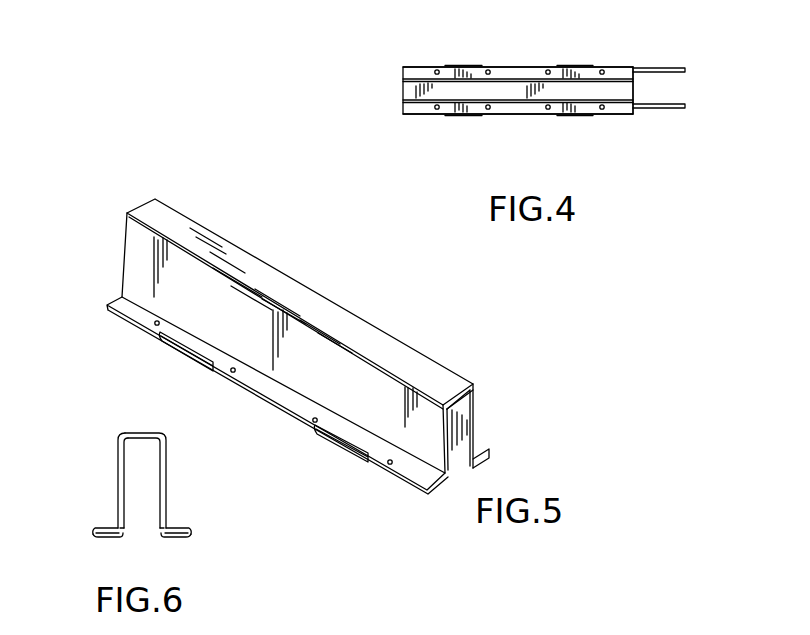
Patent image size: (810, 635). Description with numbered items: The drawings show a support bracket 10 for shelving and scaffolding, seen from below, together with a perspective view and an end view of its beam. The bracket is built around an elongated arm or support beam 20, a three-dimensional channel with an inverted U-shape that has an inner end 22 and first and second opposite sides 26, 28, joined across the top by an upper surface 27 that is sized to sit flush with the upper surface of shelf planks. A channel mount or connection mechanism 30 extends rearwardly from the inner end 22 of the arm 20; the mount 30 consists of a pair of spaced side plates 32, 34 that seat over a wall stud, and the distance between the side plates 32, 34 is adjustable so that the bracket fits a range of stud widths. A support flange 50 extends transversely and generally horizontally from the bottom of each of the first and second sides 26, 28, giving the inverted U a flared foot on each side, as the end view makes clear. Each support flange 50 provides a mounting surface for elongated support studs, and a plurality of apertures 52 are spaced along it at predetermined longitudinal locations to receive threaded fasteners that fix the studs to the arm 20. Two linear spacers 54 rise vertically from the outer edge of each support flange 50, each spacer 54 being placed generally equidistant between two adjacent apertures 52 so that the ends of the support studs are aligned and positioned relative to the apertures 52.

In FIG. 4, the support bracket 10 is at (376, 106).
In FIG. 5, the elongated arm or support beam 20 is at (362, 298).
In FIG. 6, the elongated arm or support beam 20 is at (113, 415).
In FIG. 4, the inner end 22 is at (634, 80).
In FIG. 4, the first side 26 is at (517, 103).
In FIG. 5, the first side 26 is at (135, 262).
In FIG. 6, the first side 26 is at (117, 466).
In FIG. 5, the upper surface 27 is at (155, 213).
In FIG. 4, the second side 28 is at (515, 78).
In FIG. 5, the second side 28 is at (478, 412).
In FIG. 6, the second side 28 is at (166, 472).
In FIG. 4, the channel mount or connection mechanism 30 is at (670, 64).
In FIG. 4, the side plate 32 is at (662, 110).
In FIG. 4, the side plate 34 is at (682, 66).
In FIG. 4, the support flange 50 is at (417, 72).
In FIG. 5, the support flange 50 is at (488, 456).
In FIG. 6, the support flange 50 is at (105, 540).
In FIG. 4, the aperture 52 is at (548, 110).
In FIG. 5, the aperture 52 is at (232, 373).
In FIG. 4, the linear spacer 54 is at (467, 65).
In FIG. 5, the linear spacer 54 is at (190, 355).
In FIG. 6, the linear spacer 54 is at (93, 528).